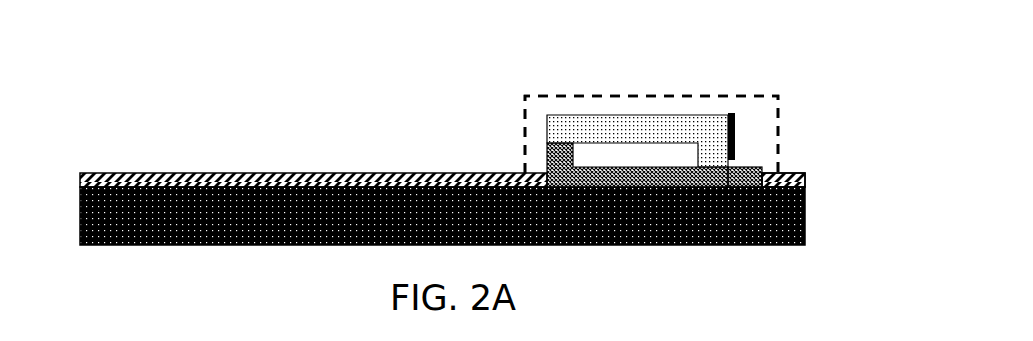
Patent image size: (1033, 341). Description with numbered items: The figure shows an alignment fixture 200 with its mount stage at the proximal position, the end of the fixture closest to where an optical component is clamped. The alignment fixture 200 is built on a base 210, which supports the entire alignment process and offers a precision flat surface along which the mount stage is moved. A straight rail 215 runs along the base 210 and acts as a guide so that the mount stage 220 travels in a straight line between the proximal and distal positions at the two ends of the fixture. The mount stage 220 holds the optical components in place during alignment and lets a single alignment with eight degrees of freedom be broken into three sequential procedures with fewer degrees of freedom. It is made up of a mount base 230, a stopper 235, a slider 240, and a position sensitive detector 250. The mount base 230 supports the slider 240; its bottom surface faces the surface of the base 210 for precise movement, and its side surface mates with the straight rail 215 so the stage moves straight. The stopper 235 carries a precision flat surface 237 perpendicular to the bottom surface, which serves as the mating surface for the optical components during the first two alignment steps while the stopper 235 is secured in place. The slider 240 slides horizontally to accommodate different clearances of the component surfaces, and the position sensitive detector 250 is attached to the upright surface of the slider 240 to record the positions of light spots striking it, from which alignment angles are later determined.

The alignment fixture 200 is at (826, 61).
The base 210 is at (751, 248).
The straight rail 215 is at (297, 171).
The mount stage 220 is at (661, 96).
The mount base 230 is at (544, 160).
The stopper 235 is at (746, 165).
The precision flat surface 237 is at (771, 173).
The slider 240 is at (696, 114).
The position sensitive detector (PSD) 250 is at (737, 113).